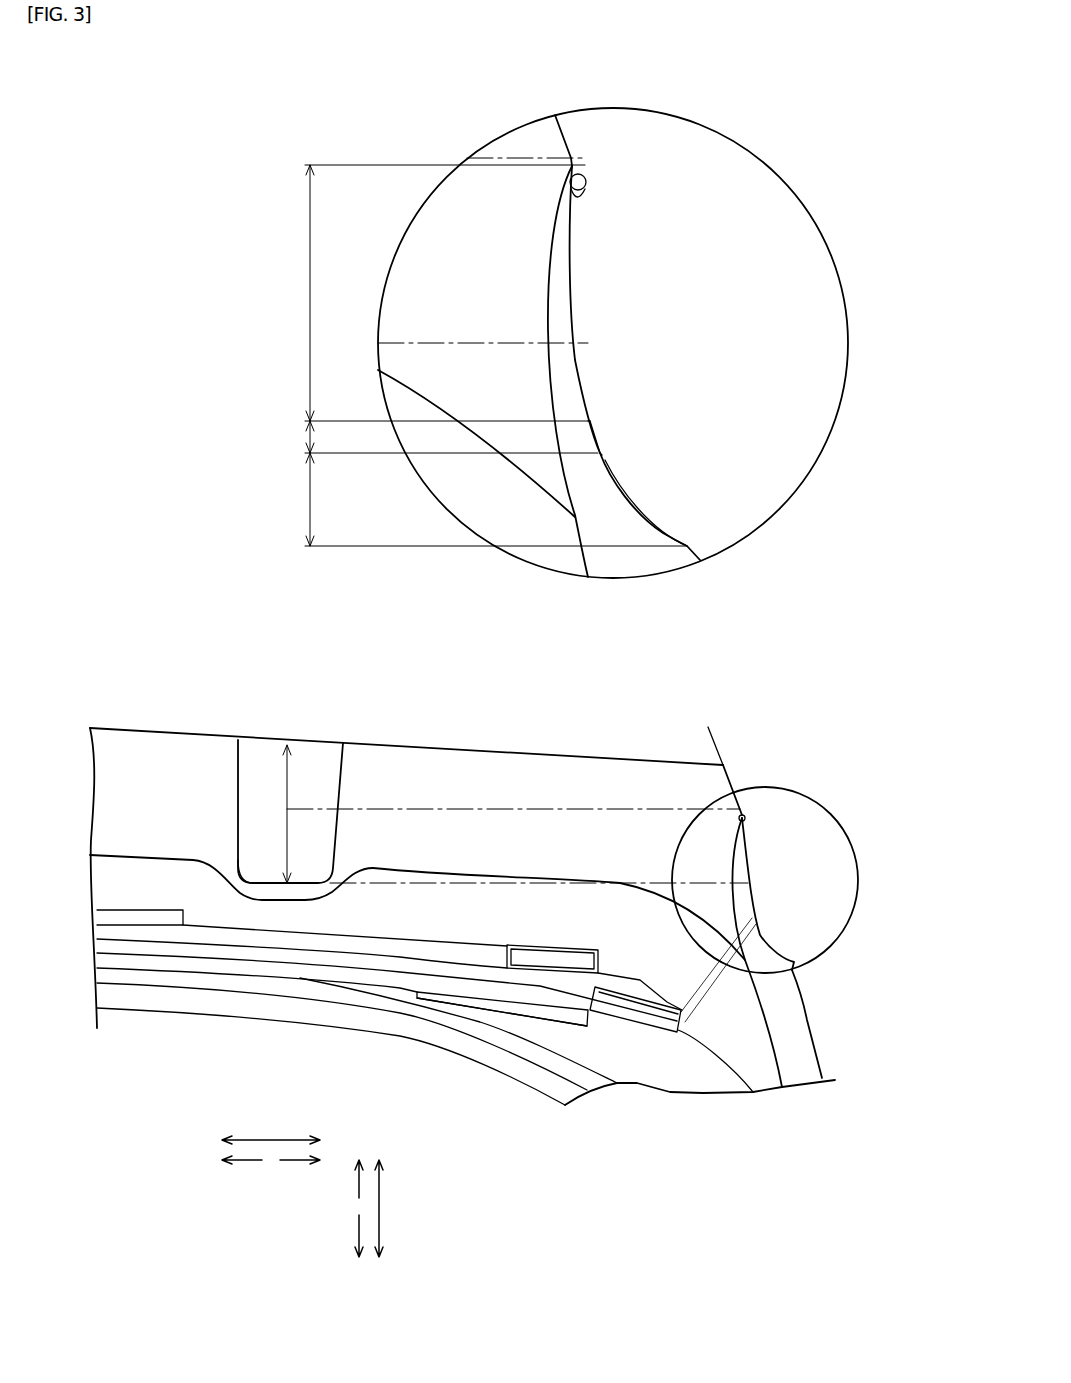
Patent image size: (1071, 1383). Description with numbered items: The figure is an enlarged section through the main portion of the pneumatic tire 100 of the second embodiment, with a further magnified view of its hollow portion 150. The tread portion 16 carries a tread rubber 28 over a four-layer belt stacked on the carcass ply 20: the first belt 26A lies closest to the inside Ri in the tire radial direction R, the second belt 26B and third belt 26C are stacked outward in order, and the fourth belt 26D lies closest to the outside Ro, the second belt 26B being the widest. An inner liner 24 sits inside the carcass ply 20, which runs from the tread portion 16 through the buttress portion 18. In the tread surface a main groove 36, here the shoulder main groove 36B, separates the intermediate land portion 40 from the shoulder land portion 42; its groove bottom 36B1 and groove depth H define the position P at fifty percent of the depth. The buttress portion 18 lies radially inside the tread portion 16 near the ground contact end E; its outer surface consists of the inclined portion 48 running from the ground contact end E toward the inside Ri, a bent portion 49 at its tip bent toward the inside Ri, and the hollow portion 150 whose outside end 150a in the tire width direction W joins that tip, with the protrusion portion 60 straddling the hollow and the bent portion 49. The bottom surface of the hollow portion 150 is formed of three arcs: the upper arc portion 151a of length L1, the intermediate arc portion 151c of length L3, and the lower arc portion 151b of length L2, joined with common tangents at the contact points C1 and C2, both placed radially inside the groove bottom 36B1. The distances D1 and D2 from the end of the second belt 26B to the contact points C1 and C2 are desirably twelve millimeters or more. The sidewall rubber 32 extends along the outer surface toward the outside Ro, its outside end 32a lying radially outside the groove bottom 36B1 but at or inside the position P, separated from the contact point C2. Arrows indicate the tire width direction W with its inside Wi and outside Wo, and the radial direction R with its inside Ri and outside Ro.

The pneumatic tire 100 is at (103, 361).
The hollow portion 150 is at (646, 520).
The inclined portion 48 is at (570, 143).
The outside end of sidewall rubber 32a is at (577, 164).
The bent portion 49 is at (586, 178).
The protrusion portion 60 is at (584, 190).
The side surface of connection portion 150a is at (580, 198).
The upper arc portion 151a is at (573, 296).
The lower arc portion 151b is at (632, 510).
The intermediate arc portion 151c is at (598, 435).
The contact point C1 is at (590, 420).
The contact point C2 is at (601, 455).
The sidewall rubber 32 is at (640, 548).
The length of upper arc portion L1 is at (434, 293).
The length of lower arc portion L2 is at (483, 499).
The length of intermediate arc portion L3 is at (439, 437).
The tread portion 16 is at (487, 933).
The tread rubber 28 is at (114, 795).
The intermediate land portion 40 is at (147, 729).
The shoulder land portion 42 is at (398, 740).
The shoulder main groove 36B is at (231, 766).
The main groove 36 is at (240, 762).
The groove bottom 36B1 is at (262, 880).
The groove depth H is at (278, 814).
The position of fifty percent of groove depth P is at (288, 808).
The fourth belt 26D is at (127, 913).
The third belt 26C is at (587, 962).
The first belt 26A is at (550, 1005).
The second belt 26B is at (667, 1018).
The inner liner 24 is at (415, 1035).
The carcass ply 20 is at (493, 1038).
The distance D1 is at (727, 1005).
The distance D2 is at (720, 978).
The buttress portion 18 is at (863, 935).
The ground contact end E is at (711, 735).
The tire width direction W is at (271, 1130).
The inside in tire width direction Wi is at (242, 1174).
The outside in tire width direction Wo is at (300, 1174).
The outside in tire radial direction Ro is at (346, 1179).
The inside in tire radial direction Ri is at (348, 1236).
The tire radial direction R is at (387, 1208).